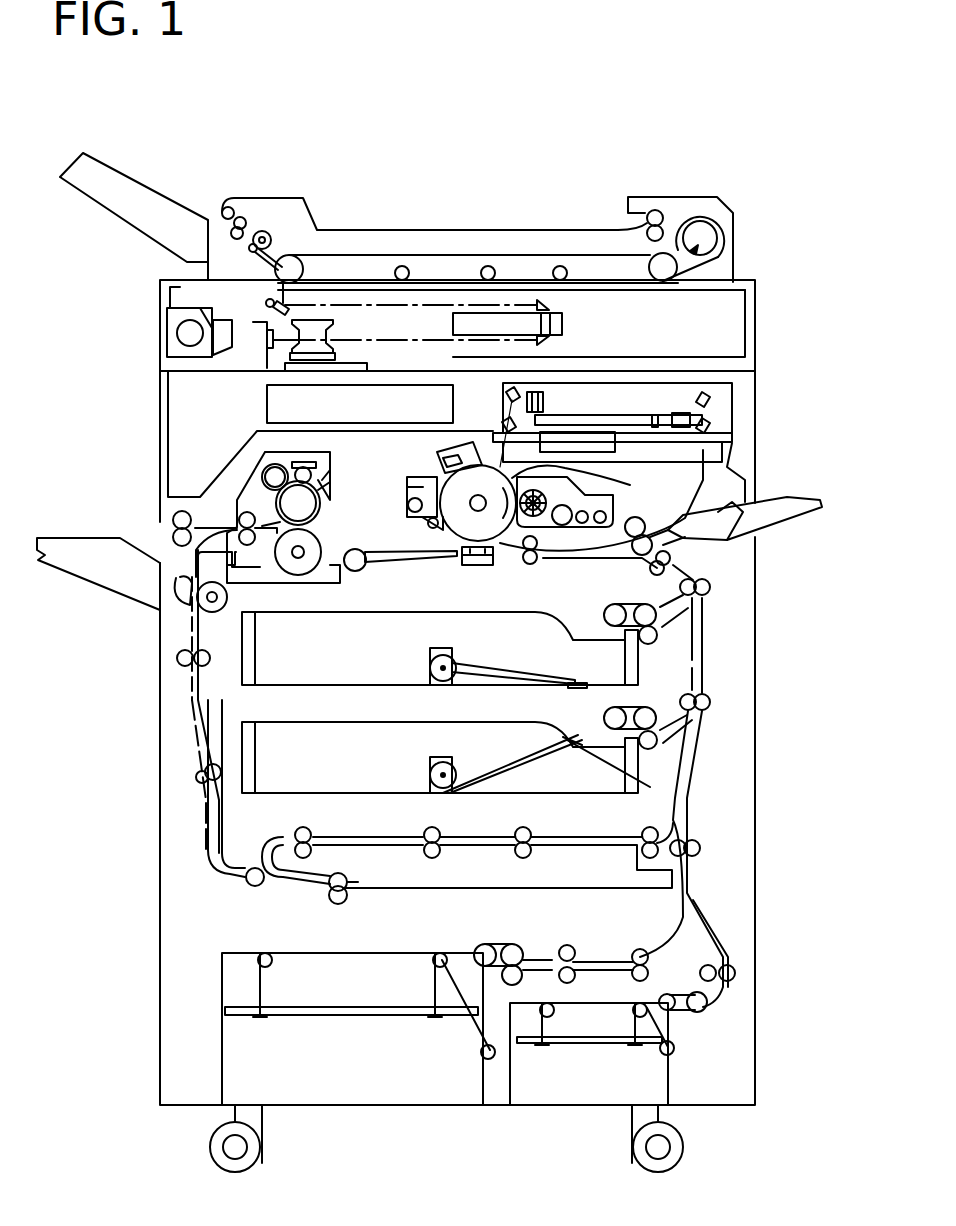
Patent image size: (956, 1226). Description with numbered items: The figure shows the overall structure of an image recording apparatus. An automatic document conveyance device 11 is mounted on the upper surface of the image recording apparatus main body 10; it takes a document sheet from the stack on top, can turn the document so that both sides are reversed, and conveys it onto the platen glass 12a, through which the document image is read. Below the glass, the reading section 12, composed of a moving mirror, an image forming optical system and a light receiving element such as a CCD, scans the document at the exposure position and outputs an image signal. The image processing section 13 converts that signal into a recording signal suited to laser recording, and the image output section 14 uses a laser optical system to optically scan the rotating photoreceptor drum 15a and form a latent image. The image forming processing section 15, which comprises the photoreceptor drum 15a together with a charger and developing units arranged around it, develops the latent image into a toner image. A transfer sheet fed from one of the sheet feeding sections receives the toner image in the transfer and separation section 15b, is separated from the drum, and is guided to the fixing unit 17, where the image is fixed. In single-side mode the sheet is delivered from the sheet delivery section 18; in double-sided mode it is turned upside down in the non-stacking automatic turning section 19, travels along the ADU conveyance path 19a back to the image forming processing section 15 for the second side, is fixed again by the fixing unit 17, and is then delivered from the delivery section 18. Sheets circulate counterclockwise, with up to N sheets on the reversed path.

The image recording apparatus main body 10 is at (723, 787).
The automatic document conveyance device 11 is at (513, 243).
The reading section 12 is at (610, 305).
The platen glass 12a is at (445, 283).
The image processing section 13 is at (278, 410).
The image output section 14 is at (670, 382).
The image forming processing section 15 is at (527, 570).
The photoreceptor drum 15a is at (613, 483).
The transfer and separation section 15b is at (477, 567).
The fixing unit 17 is at (307, 507).
The sheet delivery section 18 is at (158, 522).
The automatic turning section (ADU) 19 is at (310, 870).
The ADU conveyance path 19a is at (193, 632).